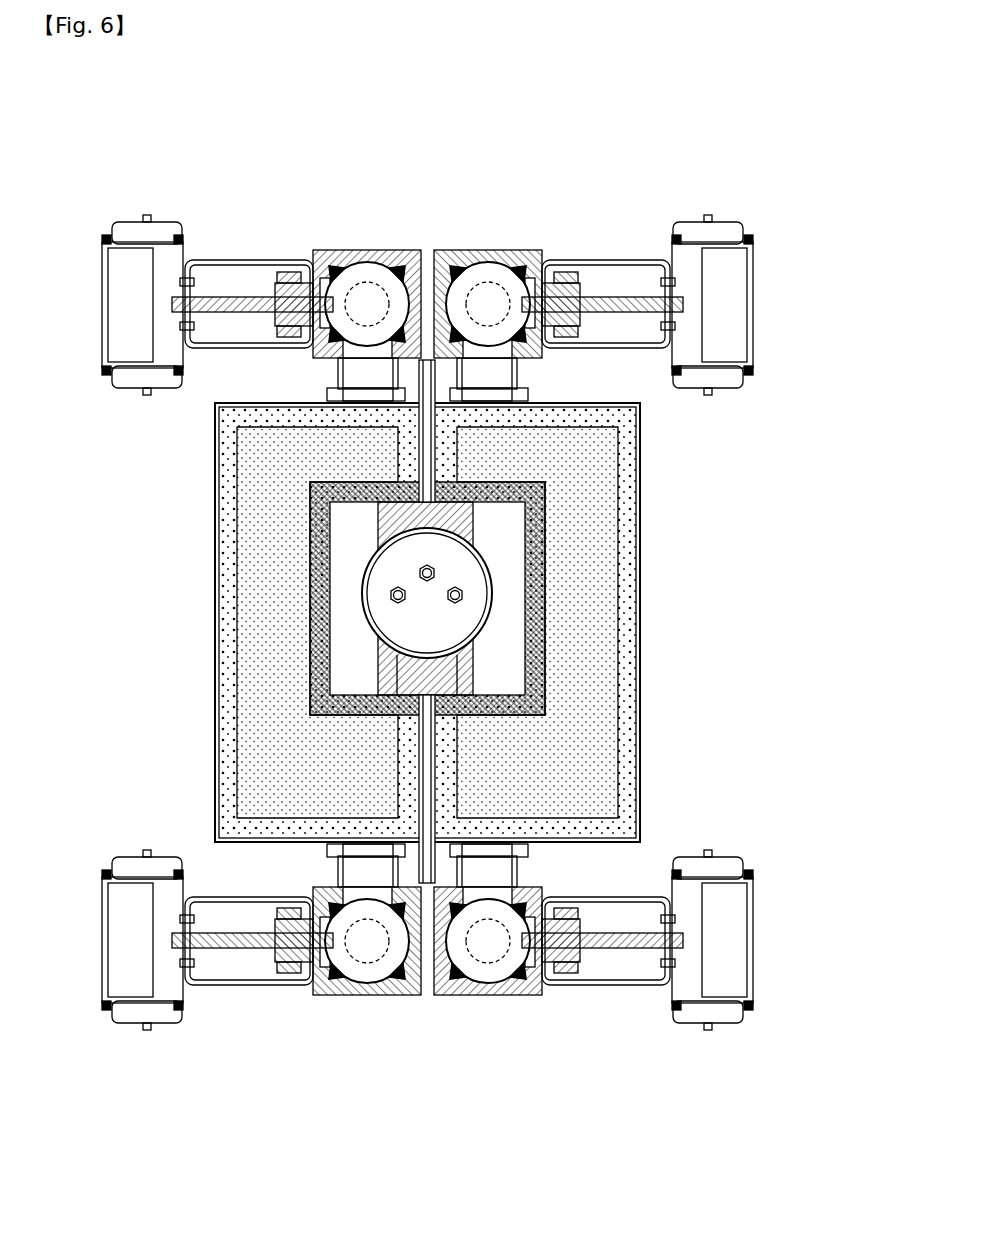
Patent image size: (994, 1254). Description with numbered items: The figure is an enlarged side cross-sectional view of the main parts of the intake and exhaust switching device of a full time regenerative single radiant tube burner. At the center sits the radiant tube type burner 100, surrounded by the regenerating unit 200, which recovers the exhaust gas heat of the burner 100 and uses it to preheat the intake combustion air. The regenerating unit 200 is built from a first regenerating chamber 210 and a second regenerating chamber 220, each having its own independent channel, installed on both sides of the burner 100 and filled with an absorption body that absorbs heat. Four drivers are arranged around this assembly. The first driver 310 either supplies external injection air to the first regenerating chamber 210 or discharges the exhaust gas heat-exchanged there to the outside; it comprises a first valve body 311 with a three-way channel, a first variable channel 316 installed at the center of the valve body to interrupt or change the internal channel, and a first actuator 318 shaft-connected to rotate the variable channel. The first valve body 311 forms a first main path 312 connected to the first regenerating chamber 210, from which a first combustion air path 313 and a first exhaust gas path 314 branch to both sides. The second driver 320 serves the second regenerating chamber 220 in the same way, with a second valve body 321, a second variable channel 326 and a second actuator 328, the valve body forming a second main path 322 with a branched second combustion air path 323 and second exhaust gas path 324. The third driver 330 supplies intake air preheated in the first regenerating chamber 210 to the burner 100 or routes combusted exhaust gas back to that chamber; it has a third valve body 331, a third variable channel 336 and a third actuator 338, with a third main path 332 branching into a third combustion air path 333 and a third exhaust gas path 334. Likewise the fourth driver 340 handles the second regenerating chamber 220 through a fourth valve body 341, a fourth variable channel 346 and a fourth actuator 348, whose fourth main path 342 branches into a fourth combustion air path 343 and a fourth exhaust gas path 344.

The radiant tube type burner 100 is at (490, 548).
The regenerating unit 200 is at (395, 621).
The first regenerating chamber 210 is at (255, 590).
The second regenerating chamber 220 is at (640, 583).
The first driver 310 is at (263, 238).
The first valve body 311 is at (313, 262).
The first main path 312 is at (340, 372).
The first combustion air path 313 is at (326, 238).
The first exhaust gas path 314 is at (367, 283).
The first variable channel 316 is at (372, 295).
The first actuator 318 is at (168, 253).
The second driver 320 is at (602, 238).
The second valve body 321 is at (542, 262).
The second main path 322 is at (515, 372).
The second combustion air path 323 is at (505, 238).
The second exhaust gas path 324 is at (489, 283).
The second variable channel 326 is at (520, 258).
The second actuator 328 is at (698, 253).
The third driver 330 is at (261, 1005).
The third valve body 331 is at (313, 983).
The third main path 332 is at (340, 873).
The third combustion air path 333 is at (322, 1000).
The third exhaust gas path 334 is at (367, 962).
The third variable channel 336 is at (372, 950).
The third actuator 338 is at (163, 992).
The fourth driver 340 is at (599, 1004).
The fourth valve body 341 is at (542, 983).
The fourth main path 342 is at (515, 873).
The fourth combustion air path 343 is at (504, 1000).
The fourth exhaust gas path 344 is at (489, 962).
The fourth variable channel 346 is at (520, 987).
The fourth actuator 348 is at (720, 992).